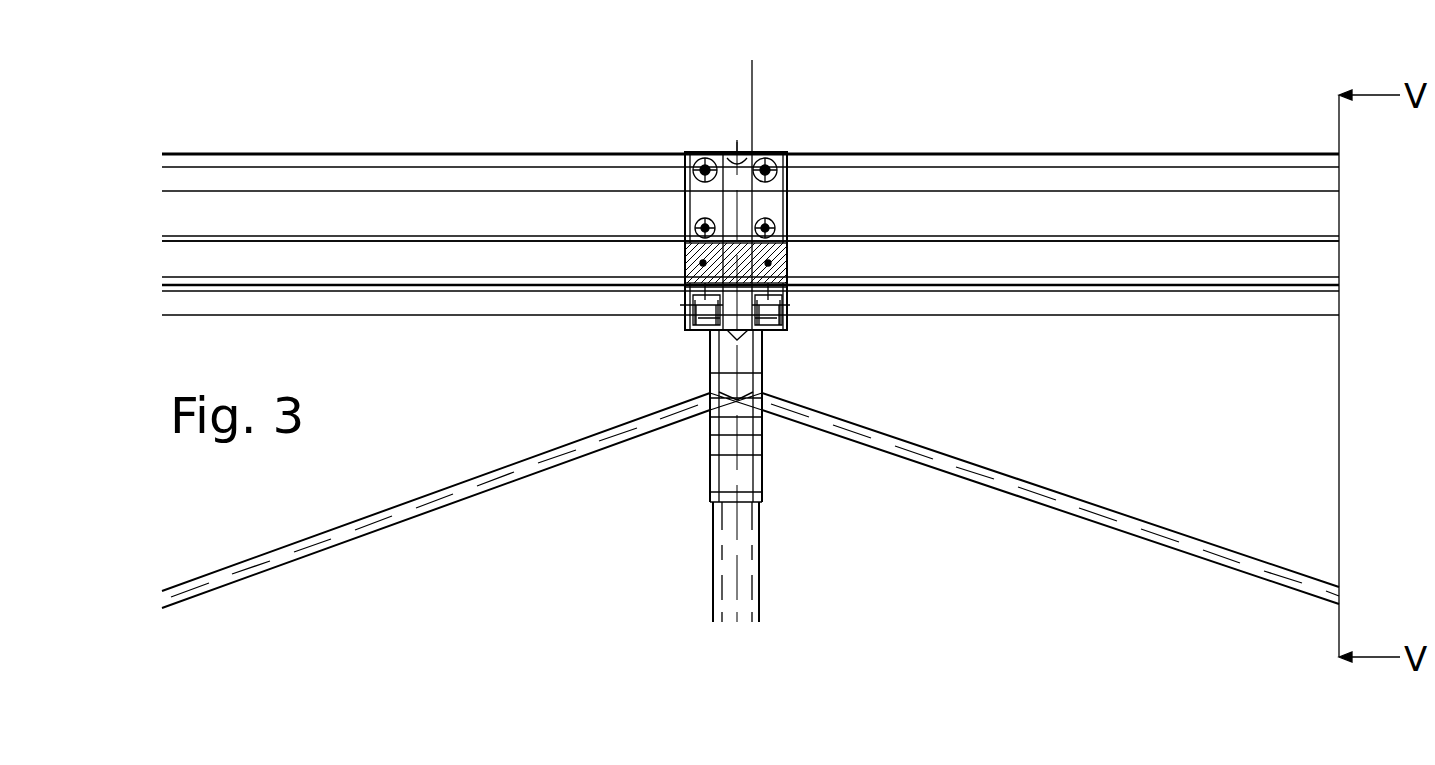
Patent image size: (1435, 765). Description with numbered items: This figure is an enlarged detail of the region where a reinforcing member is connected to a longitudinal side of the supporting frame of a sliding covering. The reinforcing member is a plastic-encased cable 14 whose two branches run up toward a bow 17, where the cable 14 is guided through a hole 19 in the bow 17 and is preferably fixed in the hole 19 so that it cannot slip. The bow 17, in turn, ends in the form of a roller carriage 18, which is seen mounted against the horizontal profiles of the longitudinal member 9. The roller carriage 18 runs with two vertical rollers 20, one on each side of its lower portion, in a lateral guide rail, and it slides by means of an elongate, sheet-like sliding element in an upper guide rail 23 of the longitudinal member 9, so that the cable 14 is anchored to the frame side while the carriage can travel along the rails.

The longitudinal member 9 is at (914, 180).
The cable 14 is at (552, 460).
The bow 17 is at (737, 583).
The roller carriage 18 is at (767, 200).
The hole 19 is at (755, 392).
The vertical rollers 20 is at (685, 317).
The upper guide rail 23 is at (978, 273).